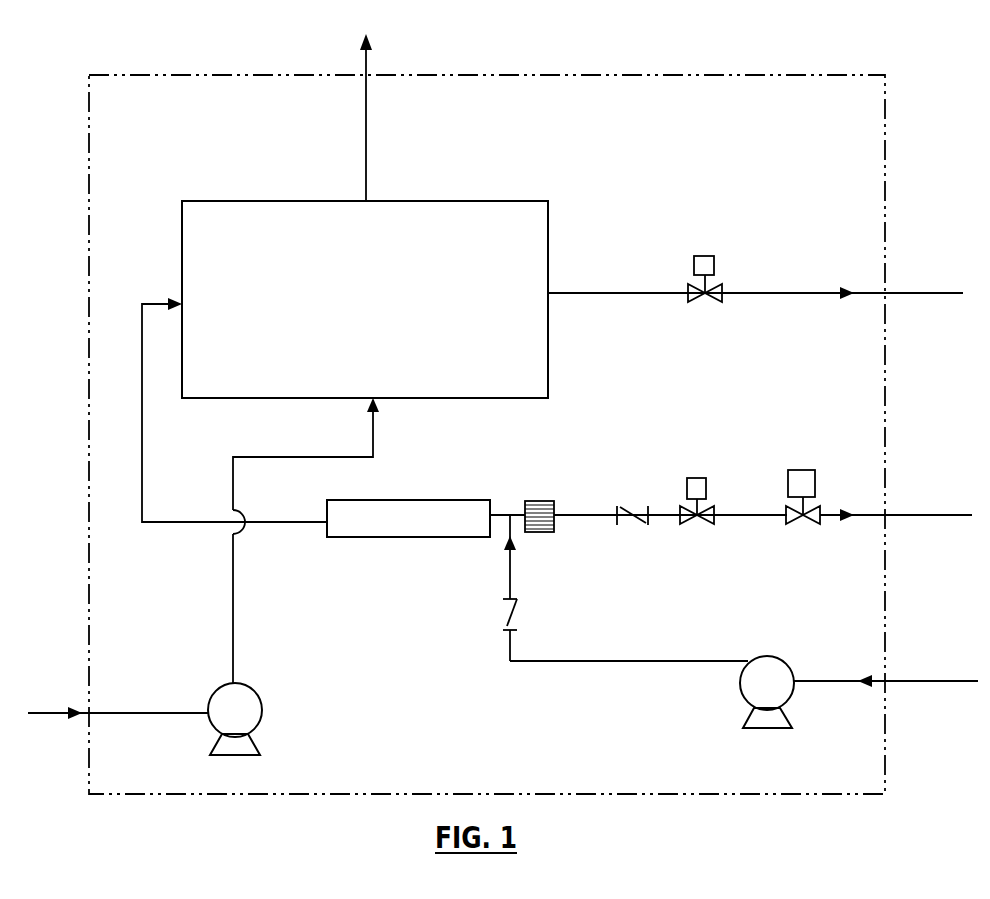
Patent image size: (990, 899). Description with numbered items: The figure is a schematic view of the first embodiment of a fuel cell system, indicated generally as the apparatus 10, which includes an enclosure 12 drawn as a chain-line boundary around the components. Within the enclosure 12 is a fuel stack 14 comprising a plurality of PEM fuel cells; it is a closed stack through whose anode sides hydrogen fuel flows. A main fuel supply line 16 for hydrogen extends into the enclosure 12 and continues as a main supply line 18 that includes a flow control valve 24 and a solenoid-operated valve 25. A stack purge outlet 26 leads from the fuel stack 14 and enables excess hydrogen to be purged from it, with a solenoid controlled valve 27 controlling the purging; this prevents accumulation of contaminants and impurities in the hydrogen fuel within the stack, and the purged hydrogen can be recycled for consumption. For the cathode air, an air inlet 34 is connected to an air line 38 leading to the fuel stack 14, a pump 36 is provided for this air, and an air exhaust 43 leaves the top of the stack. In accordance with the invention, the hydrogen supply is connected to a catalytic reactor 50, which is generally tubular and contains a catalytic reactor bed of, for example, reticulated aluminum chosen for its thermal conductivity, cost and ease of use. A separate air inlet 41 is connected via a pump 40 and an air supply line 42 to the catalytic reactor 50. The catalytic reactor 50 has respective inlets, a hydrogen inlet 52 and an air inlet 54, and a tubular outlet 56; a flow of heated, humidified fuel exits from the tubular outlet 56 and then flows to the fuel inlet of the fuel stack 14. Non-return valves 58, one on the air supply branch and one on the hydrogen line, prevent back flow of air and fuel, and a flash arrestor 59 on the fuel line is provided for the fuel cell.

The fuel cell system apparatus 10 is at (600, 58).
The enclosure 12 is at (885, 172).
The fuel stack 14 is at (548, 237).
The main fuel supply line 16 is at (945, 517).
The main supply line 18 is at (748, 517).
The flow control valve 24 is at (803, 470).
The solenoid-operated valve 25 is at (694, 478).
The stack purge outlet 26 is at (765, 289).
The solenoid controlled valve 27 is at (700, 305).
The air inlet 34 is at (30, 712).
The pump 36 is at (212, 698).
The air line 38 is at (235, 628).
The pump 40 is at (786, 668).
The separate air inlet 41 is at (947, 683).
The air supply line 42 is at (628, 663).
The air exhaust 43 is at (366, 118).
The catalytic reactor 50 is at (375, 540).
The hydrogen inlet 52 is at (497, 512).
The air inlet 54 is at (505, 558).
The tubular outlet 56 is at (185, 524).
The non-return valves 58 is at (632, 526).
The flash arrestor 59 is at (540, 534).